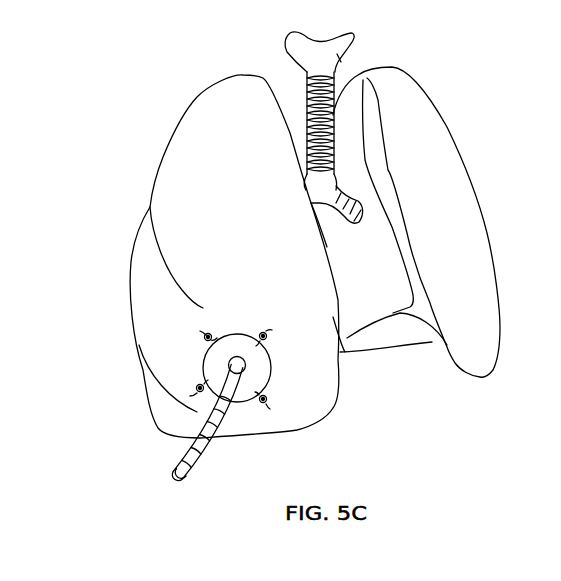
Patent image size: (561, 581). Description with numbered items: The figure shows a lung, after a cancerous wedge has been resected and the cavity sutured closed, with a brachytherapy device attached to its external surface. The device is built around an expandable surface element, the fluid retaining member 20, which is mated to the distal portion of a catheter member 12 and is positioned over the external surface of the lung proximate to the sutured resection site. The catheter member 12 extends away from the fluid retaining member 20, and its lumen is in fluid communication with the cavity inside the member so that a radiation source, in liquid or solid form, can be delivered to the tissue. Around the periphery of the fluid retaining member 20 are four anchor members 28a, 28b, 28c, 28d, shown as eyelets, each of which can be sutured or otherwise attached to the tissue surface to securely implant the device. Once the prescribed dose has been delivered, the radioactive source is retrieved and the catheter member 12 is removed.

The fluid retaining member 20 is at (237, 343).
The catheter member 12 is at (185, 458).
The anchor member 28a is at (205, 338).
The anchor member 28b is at (198, 387).
The anchor member 28c is at (267, 334).
The anchor member 28d is at (263, 404).